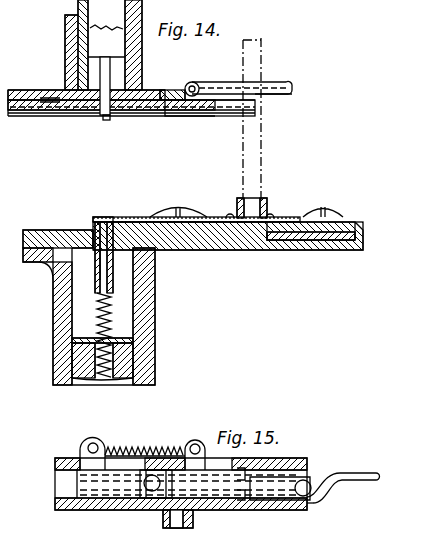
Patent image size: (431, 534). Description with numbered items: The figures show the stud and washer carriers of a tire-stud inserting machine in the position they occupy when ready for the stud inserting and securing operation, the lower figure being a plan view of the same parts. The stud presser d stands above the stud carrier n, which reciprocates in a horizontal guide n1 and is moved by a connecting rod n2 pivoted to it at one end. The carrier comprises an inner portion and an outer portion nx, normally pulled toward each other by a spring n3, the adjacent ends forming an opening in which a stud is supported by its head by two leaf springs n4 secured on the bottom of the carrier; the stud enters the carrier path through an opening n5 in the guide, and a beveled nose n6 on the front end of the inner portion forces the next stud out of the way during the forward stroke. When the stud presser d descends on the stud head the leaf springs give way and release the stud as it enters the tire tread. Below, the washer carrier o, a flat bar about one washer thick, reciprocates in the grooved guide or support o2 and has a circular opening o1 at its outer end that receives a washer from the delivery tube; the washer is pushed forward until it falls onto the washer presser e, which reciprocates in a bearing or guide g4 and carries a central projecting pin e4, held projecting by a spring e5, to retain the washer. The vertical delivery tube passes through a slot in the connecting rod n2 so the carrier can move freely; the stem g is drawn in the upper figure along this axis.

In FIG. 14, the stud presser d is at (103, 45).
In FIG. 14, the horizontal guide n1 is at (19, 108).
In FIG. 14, the outer portion of the stud carrier nx is at (56, 110).
In FIG. 15, the outer portion of the stud carrier nx is at (78, 466).
In FIG. 14, the leaf springs n4 is at (96, 115).
In FIG. 14, the opening in the guide n5 is at (152, 110).
In FIG. 14, the stud carrier n is at (187, 110).
In FIG. 15, the stud carrier n is at (215, 466).
In FIG. 14, the connecting rod n2 is at (270, 96).
In FIG. 15, the connecting rod n2 is at (360, 464).
In FIG. 15, the spring n3 is at (140, 448).
In FIG. 15, the beveled nose n6 is at (160, 493).
In FIG. 14, the stem g is at (250, 164).
In FIG. 15, the stem g is at (313, 498).
In FIG. 14, the bearing or guide g4 is at (142, 361).
In FIG. 14, the washer carrier o is at (310, 250).
In FIG. 14, the circular opening o1 is at (111, 205).
In FIG. 14, the guide or support o2 is at (47, 240).
In FIG. 14, the washer presser e is at (110, 310).
In FIG. 14, the central projecting pin e4 is at (97, 257).
In FIG. 14, the spring e5 is at (93, 348).